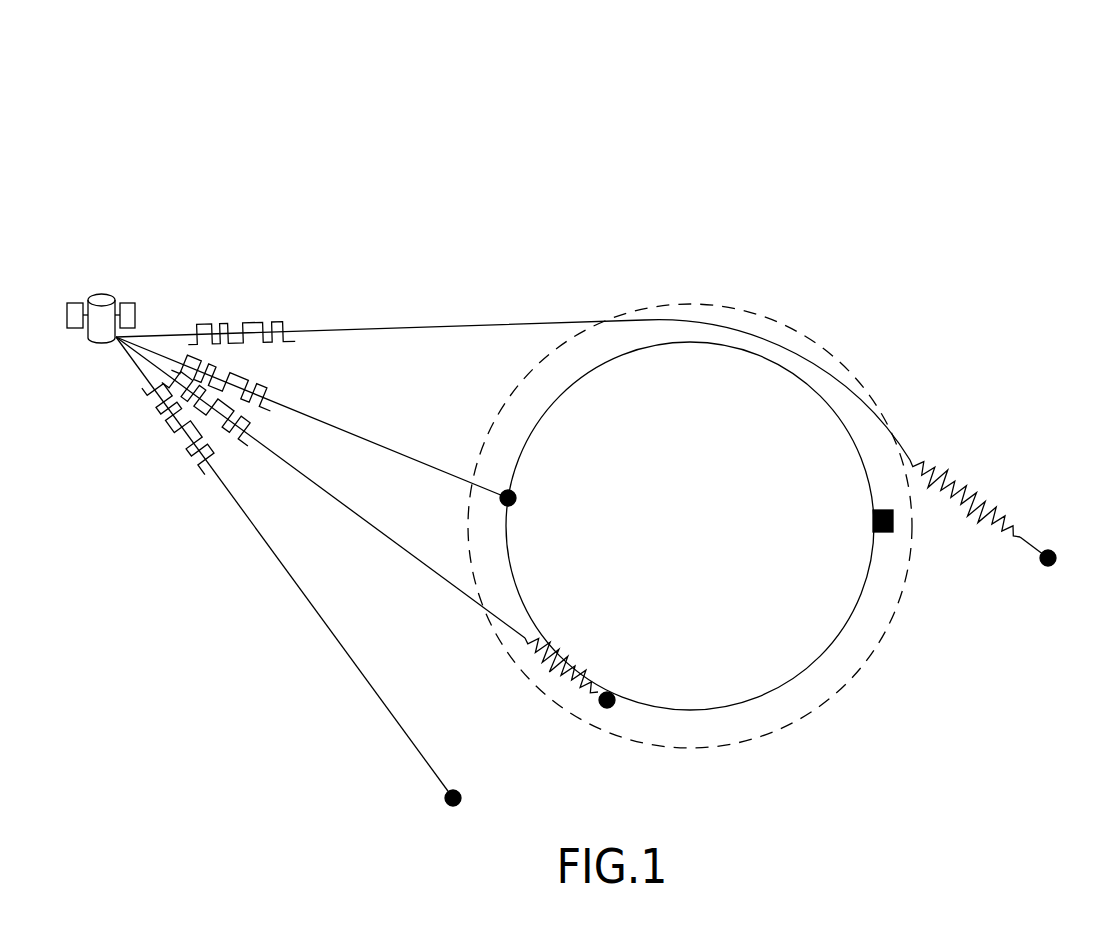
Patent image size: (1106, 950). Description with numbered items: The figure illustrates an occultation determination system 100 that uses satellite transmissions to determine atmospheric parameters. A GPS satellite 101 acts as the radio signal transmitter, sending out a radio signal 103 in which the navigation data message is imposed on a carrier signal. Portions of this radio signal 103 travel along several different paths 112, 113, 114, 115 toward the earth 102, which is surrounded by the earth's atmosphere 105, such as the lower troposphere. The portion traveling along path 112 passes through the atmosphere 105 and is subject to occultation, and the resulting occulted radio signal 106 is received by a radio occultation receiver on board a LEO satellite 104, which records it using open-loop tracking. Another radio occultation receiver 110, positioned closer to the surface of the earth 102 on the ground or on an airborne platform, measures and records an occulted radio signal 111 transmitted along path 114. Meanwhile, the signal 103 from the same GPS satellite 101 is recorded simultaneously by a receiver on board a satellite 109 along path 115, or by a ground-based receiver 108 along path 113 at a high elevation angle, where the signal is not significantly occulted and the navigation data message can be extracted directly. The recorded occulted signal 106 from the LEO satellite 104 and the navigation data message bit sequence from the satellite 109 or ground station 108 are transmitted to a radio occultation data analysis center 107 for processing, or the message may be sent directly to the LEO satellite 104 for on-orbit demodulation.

The occultation determination system 100 is at (262, 136).
The GPS satellite 101 is at (90, 292).
The earth 102 is at (643, 507).
The radio signal 103 is at (258, 322).
The LEO satellite 104 is at (1050, 550).
The earth's atmosphere 105 is at (798, 718).
The occulted radio signal 106 is at (988, 481).
The radio occultation data analysis center 107 is at (895, 516).
The ground-based receiver 108 is at (519, 496).
The satellite 109 is at (459, 790).
The radio occultation receiver 110 is at (612, 691).
The occulted radio signal 111 is at (527, 653).
The path 112 is at (350, 331).
The path 113 is at (350, 430).
The path 114 is at (335, 495).
The path 115 is at (283, 565).